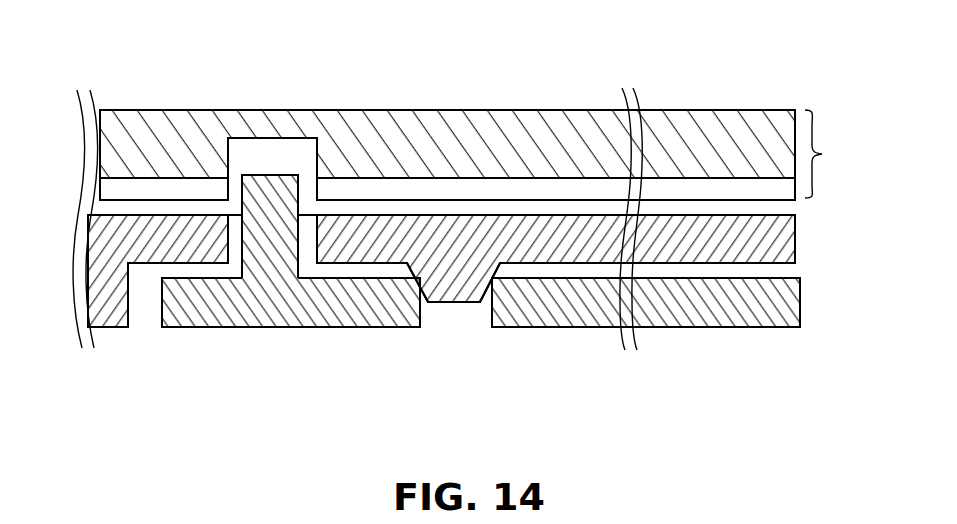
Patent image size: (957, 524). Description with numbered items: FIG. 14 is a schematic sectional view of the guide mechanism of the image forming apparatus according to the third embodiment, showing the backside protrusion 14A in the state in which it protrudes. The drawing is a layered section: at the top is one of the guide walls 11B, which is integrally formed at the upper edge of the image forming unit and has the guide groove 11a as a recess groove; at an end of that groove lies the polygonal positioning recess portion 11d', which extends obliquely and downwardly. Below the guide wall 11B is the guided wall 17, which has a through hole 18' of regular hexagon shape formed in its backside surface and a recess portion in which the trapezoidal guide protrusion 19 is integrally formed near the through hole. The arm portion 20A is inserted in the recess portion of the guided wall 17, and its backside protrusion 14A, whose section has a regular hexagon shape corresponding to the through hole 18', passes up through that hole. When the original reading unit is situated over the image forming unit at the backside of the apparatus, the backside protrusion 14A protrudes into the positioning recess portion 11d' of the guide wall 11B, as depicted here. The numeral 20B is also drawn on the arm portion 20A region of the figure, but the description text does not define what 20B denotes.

The guide wall 11B is at (491, 155).
The guide groove 11a is at (700, 190).
The positioning recess portion 11d' is at (272, 104).
The backside protrusion 14A is at (288, 152).
The guided wall 17 is at (740, 245).
The through hole 18' is at (222, 286).
The guide protrusion 19 is at (453, 303).
The arm portion 20A is at (790, 313).
The gap 20B is at (423, 310).